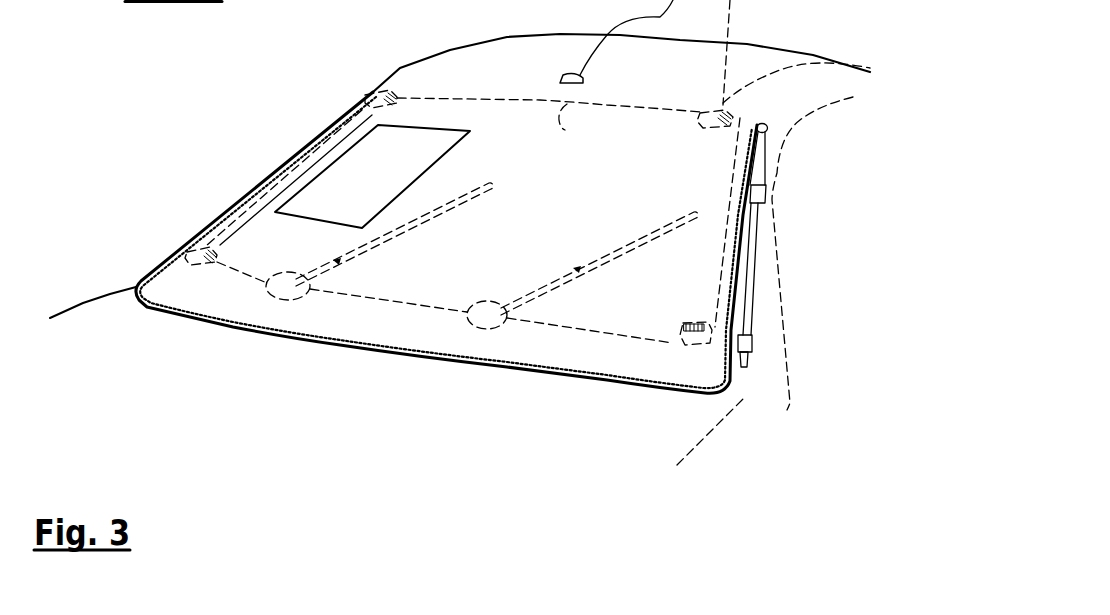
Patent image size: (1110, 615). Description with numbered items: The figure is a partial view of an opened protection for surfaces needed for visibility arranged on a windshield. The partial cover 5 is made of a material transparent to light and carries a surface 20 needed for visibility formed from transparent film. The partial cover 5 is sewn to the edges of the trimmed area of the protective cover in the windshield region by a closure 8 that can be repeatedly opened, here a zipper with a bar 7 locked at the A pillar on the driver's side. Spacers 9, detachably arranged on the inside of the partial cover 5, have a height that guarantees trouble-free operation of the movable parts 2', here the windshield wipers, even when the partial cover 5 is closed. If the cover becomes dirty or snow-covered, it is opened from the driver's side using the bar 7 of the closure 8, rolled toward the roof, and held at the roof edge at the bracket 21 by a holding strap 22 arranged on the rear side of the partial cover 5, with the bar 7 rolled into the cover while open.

The partial cover 5 is at (654, 293).
The bar 7 is at (764, 143).
The closure 8 is at (627, 387).
The spacers 9 is at (357, 97).
The surface needed for visibility 20 is at (323, 197).
The bracket 21 is at (562, 77).
The holding strap 22 is at (553, 115).
The movable parts 2' is at (467, 351).